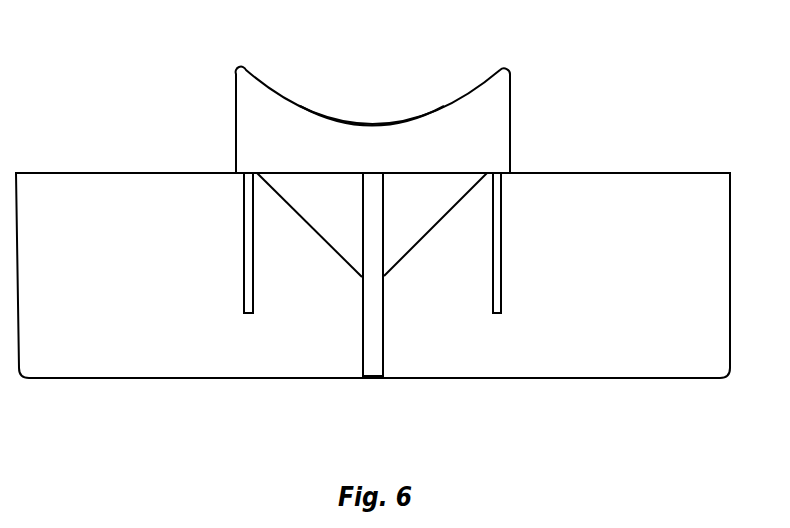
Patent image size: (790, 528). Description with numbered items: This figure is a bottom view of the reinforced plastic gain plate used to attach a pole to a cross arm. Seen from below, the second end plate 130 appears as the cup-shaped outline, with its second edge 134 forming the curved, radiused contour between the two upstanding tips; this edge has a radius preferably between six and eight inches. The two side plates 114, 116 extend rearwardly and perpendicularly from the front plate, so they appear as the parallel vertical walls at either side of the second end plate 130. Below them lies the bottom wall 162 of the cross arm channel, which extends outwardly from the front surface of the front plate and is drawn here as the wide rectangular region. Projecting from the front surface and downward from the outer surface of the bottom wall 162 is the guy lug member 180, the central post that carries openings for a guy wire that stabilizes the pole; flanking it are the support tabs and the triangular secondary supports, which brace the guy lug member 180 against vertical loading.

The second end plate 130 is at (504, 70).
The second edge 134 is at (378, 122).
The side plate 116 is at (236, 108).
The side plate 114 is at (511, 122).
The bottom wall 162 is at (114, 240).
The guy lug member 180 is at (383, 352).